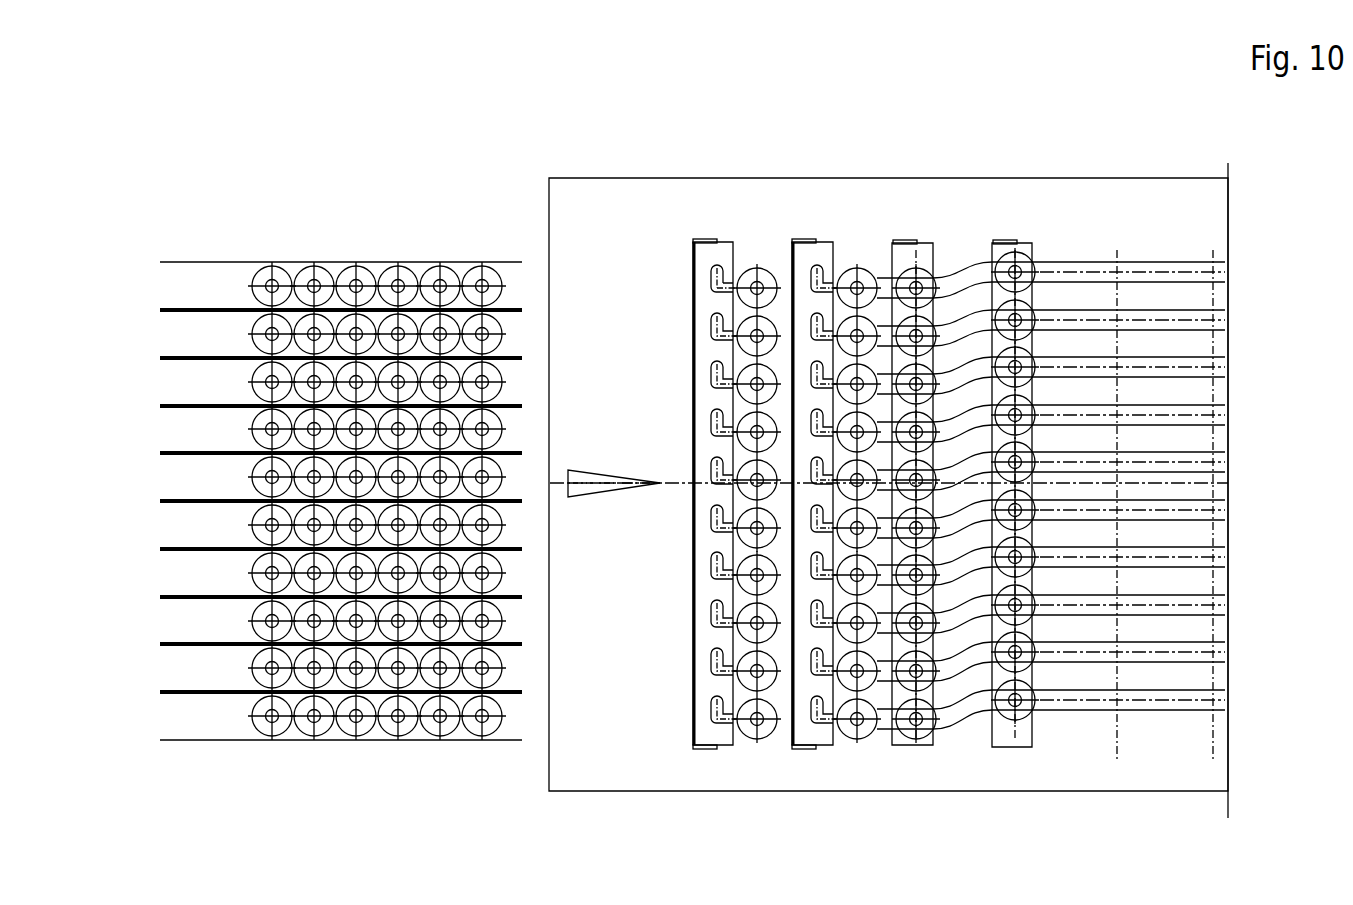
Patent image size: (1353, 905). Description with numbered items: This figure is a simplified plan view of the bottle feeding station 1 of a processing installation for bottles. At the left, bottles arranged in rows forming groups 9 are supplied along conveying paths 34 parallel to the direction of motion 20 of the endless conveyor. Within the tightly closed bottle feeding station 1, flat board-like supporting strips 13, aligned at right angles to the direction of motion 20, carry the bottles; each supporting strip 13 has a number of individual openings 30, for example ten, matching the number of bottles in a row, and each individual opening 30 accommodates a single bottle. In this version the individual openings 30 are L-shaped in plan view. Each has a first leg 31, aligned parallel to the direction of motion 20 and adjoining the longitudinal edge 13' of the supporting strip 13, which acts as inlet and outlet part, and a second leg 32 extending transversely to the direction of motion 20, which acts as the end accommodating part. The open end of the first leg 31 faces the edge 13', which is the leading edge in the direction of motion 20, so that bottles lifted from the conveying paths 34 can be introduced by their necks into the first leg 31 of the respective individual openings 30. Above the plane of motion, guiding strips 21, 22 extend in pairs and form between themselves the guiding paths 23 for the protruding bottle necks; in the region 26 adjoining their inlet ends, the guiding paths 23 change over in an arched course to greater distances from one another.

The bottle feeding station 1 is at (652, 738).
The group of bottles 9 is at (310, 745).
The supporting strip 13 is at (707, 492).
The longitudinal edge of the supporting strip 13' is at (806, 470).
The direction of motion 20 is at (560, 483).
The guiding strip 21 is at (1196, 282).
The guiding strip 22 is at (1073, 262).
The guiding path 23 is at (1170, 270).
The region adjoining the inlet ends 26 is at (955, 262).
The individual opening 30 is at (716, 342).
The first leg 31 is at (720, 297).
The second leg 32 is at (708, 278).
The conveying path 34 is at (212, 283).